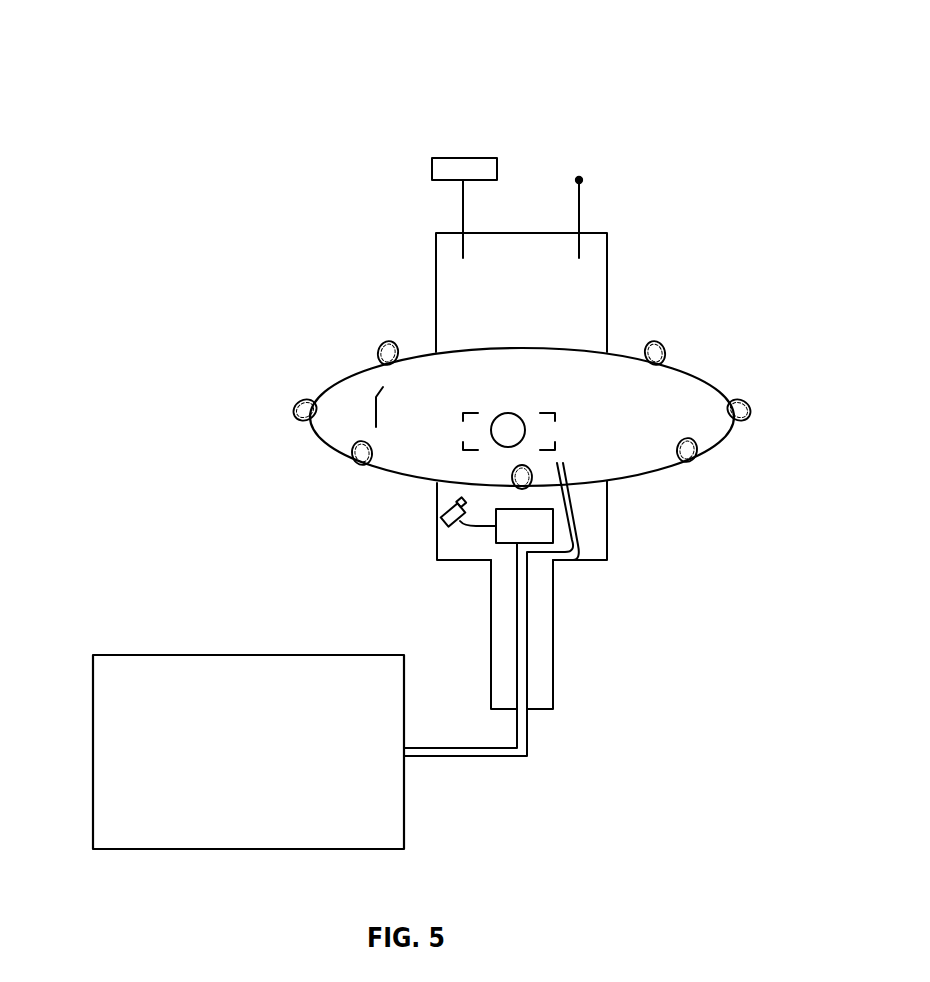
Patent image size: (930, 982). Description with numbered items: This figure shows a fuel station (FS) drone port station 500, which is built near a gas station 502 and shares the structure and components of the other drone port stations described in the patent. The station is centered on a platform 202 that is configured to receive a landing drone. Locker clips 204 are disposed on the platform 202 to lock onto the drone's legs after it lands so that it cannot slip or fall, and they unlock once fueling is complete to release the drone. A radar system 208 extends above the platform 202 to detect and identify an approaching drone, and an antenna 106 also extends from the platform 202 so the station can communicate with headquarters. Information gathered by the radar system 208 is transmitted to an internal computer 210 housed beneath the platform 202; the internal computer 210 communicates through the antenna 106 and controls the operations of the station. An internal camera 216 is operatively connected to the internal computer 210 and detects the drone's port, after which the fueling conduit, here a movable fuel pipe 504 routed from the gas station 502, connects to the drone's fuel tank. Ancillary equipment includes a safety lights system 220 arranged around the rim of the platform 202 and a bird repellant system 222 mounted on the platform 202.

The FS drone port station 500 is at (112, 74).
The antenna 106 is at (582, 218).
The platform 202 is at (663, 397).
The locker clips 204 is at (457, 443).
The radar system 208 is at (463, 158).
The internal computer 210 is at (497, 545).
The internal camera 216 is at (450, 522).
The safety lights system 220 is at (742, 409).
The bird repellant system 222 is at (375, 413).
The gas station 502 is at (158, 656).
The movable fuel pipe 504 is at (577, 542).